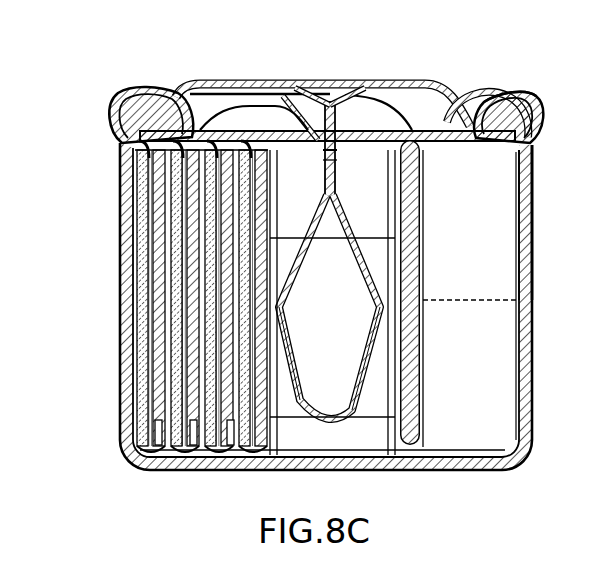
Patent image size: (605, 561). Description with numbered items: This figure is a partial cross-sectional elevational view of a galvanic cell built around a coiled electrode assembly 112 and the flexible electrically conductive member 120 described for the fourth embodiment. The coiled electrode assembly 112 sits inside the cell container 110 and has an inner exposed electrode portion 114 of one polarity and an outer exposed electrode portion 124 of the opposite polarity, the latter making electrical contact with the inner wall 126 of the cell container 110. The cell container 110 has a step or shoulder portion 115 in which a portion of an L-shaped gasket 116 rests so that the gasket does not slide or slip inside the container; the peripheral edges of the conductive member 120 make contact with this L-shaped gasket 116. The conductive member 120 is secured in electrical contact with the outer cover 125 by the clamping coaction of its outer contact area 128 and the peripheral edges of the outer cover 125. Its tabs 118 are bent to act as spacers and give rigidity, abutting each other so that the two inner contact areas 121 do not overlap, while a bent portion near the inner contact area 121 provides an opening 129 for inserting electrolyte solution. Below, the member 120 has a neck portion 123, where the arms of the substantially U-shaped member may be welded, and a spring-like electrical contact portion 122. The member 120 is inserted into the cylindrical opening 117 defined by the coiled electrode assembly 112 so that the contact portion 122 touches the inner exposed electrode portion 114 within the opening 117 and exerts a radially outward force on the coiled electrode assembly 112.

The cell container 110 is at (119, 262).
The coiled electrode assembly 112 is at (200, 362).
The inner exposed electrode portion 114 is at (380, 399).
The step or shoulder portion 115 is at (525, 148).
The L-shaped gasket 116 is at (528, 113).
The cylindrical opening 117 is at (302, 448).
The tabs 118 is at (336, 128).
The flexible electrically conductive member 120 is at (354, 234).
The inner contact area 121 is at (404, 90).
The spring-like electrical contact portion 122 is at (377, 309).
The neck portion 123 is at (336, 172).
The outer exposed electrode portion 124 is at (123, 336).
The outer cover 125 is at (460, 108).
The inner wall 126 is at (515, 266).
The outer contact area 128 is at (176, 100).
The opening 129 is at (302, 94).